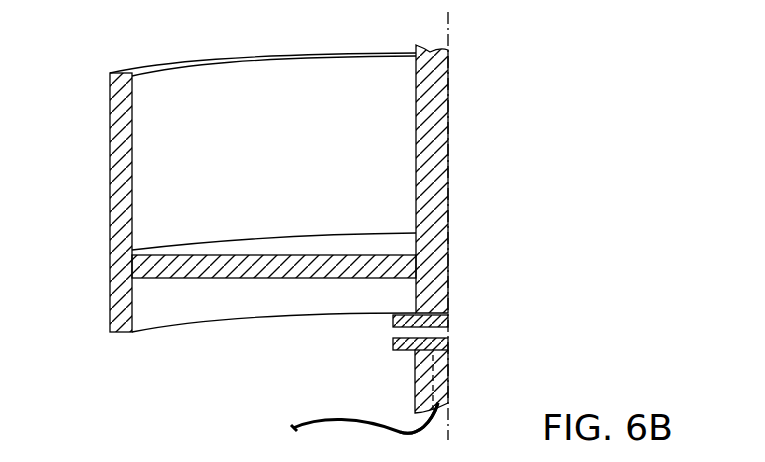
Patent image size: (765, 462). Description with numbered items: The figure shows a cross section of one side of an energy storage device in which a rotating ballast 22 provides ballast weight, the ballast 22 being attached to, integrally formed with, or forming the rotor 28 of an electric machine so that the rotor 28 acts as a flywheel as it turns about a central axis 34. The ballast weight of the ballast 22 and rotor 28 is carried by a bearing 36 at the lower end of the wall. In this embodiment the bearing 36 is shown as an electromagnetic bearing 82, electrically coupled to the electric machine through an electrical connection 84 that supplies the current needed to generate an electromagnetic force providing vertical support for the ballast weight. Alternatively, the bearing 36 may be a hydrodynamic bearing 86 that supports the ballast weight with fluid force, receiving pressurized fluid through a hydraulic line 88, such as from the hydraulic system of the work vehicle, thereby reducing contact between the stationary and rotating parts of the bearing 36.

The ballast 22 is at (122, 131).
The rotor 28 is at (120, 181).
The central axis 34 is at (448, 25).
The electromagnetic bearing 82 is at (452, 318).
The bearing 36 is at (452, 335).
The hydrodynamic bearing 86 is at (390, 332).
The hydraulic line 88 is at (325, 420).
The electrical connection 84 is at (397, 418).